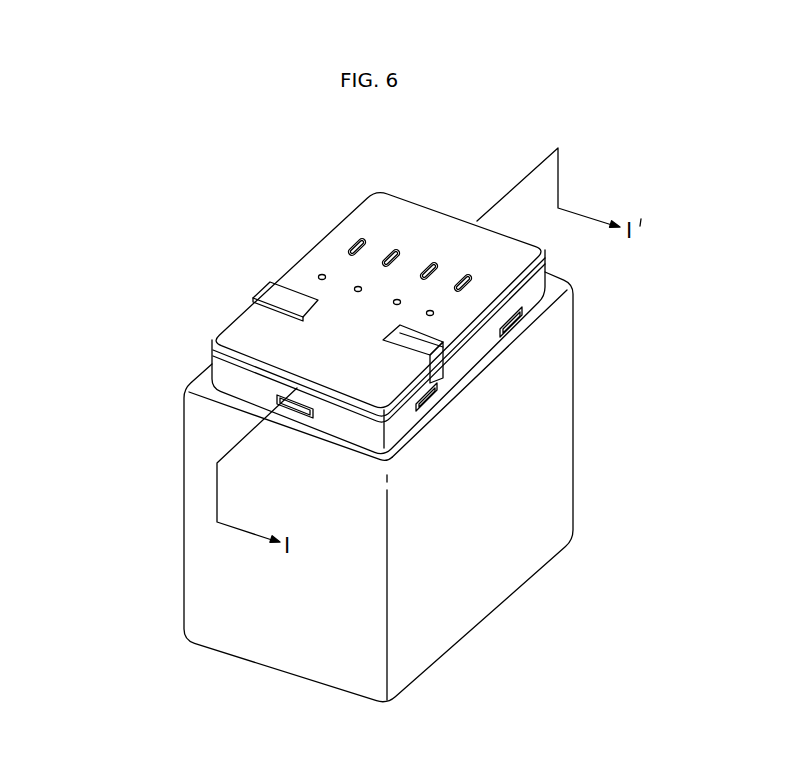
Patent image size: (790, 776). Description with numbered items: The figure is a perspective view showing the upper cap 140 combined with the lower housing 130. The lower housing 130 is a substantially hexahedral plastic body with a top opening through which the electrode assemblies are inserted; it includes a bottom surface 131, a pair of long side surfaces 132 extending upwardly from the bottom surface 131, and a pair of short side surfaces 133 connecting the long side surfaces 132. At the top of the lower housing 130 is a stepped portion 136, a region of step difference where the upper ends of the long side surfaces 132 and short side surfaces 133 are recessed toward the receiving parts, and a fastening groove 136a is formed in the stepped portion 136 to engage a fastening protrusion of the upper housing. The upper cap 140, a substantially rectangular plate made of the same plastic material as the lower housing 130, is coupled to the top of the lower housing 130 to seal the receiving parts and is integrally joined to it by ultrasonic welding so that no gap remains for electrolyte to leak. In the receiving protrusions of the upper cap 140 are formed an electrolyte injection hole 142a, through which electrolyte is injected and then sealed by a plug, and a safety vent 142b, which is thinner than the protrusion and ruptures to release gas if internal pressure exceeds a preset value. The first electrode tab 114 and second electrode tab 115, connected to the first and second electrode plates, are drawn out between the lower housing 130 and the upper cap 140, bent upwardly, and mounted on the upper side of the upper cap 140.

The lower housing 130 is at (184, 541).
The bottom surface 131 is at (442, 662).
The long side surfaces 132 is at (517, 552).
The short side surfaces 133 is at (264, 657).
The stepped portion 136 is at (220, 370).
The fastening groove 136a is at (277, 406).
The upper cap 140 is at (232, 317).
The electrolyte injection hole 142a is at (320, 272).
The safety vent 142b is at (361, 236).
The first electrode tab 114 is at (265, 290).
The second electrode tab 115 is at (430, 347).